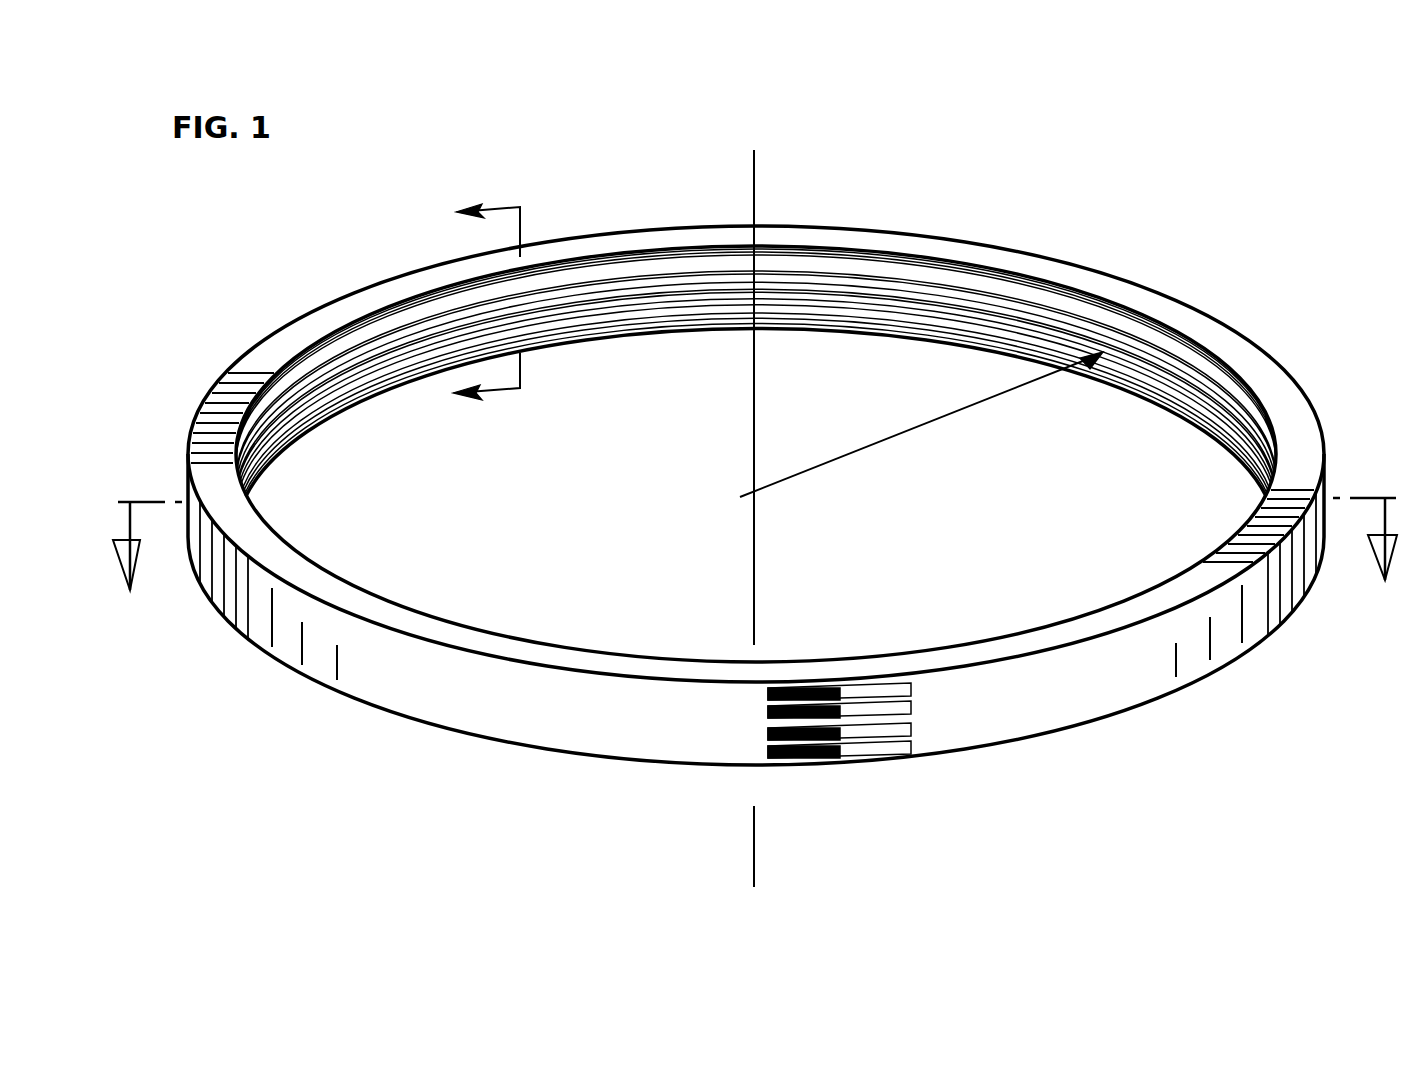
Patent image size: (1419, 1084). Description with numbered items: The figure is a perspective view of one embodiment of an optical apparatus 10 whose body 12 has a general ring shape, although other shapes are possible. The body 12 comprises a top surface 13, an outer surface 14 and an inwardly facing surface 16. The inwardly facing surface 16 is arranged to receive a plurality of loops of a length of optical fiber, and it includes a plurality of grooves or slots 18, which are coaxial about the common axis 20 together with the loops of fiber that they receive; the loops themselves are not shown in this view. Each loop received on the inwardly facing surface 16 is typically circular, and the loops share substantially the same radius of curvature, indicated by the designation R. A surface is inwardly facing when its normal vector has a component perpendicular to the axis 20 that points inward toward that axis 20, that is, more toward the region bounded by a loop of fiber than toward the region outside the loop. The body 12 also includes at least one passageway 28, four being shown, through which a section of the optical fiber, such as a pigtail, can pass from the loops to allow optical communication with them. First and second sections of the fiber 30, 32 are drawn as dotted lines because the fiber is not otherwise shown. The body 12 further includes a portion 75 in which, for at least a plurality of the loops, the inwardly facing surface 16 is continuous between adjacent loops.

The optical apparatus 10 is at (982, 215).
The body 12 is at (1262, 368).
The top surface 13 is at (1297, 474).
The outer surface 14 is at (1228, 628).
The inwardly facing surface 16 is at (1098, 318).
The grooves or slots 18 is at (601, 325).
The common axis 20 is at (756, 166).
The passageway 28 is at (911, 741).
The first section of optical fiber 30 is at (757, 698).
The second section of optical fiber 32 is at (763, 750).
The portion 75 is at (539, 400).